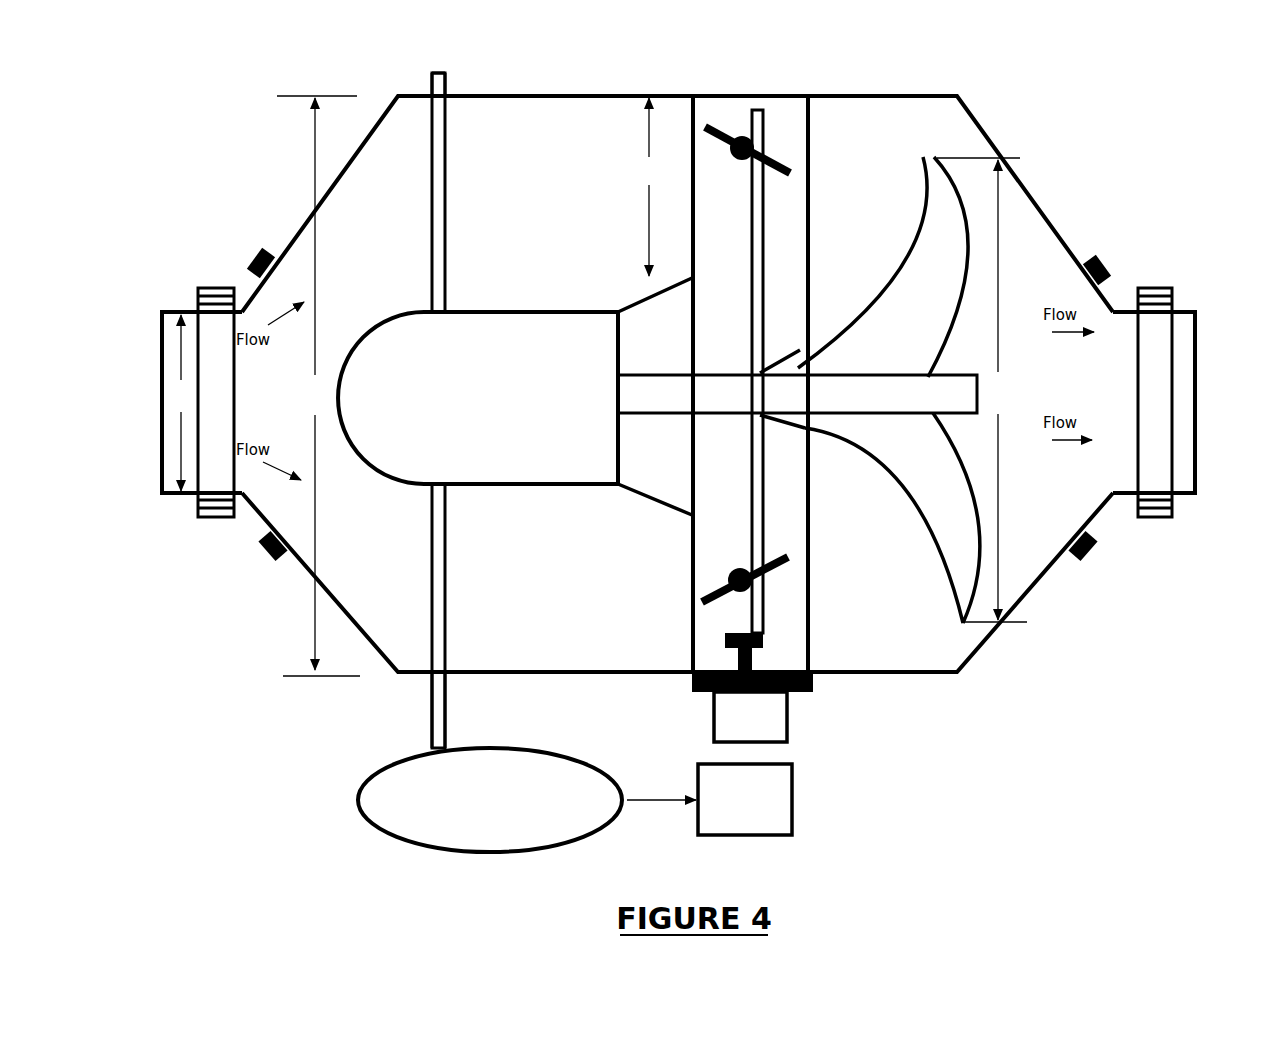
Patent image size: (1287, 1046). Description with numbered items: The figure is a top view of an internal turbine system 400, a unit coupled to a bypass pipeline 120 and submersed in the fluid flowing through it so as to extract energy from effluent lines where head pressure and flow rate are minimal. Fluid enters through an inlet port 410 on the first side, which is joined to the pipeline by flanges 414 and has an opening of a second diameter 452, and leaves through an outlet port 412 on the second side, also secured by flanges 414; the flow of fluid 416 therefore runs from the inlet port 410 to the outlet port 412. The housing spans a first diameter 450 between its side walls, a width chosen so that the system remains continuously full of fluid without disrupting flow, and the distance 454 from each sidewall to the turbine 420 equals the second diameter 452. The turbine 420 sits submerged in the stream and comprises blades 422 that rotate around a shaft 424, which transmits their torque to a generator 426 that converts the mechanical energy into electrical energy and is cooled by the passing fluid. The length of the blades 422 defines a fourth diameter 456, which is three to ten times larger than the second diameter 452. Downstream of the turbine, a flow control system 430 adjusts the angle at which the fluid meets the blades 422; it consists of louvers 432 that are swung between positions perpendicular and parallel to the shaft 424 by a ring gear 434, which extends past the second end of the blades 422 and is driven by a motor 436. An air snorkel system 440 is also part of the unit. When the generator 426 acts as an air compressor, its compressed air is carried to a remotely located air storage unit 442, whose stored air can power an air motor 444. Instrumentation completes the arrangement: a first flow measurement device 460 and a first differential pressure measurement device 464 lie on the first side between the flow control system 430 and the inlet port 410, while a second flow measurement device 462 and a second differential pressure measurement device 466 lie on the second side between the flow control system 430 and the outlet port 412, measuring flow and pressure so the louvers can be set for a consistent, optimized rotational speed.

The internal turbine system 400 is at (266, 730).
The inlet port 410 is at (162, 308).
The outlet port 412 is at (1214, 313).
The flanges 414 is at (213, 284).
The flow of fluid 416 is at (540, 202).
The turbine 420 is at (573, 296).
The blades 422 is at (870, 390).
The shaft 424 is at (988, 370).
The generator 426 is at (478, 398).
The flow control system 430 is at (830, 640).
The louvers 432 is at (790, 158).
The ring gear 434 is at (748, 521).
The motor 436 is at (792, 727).
The air snorkel system 440 is at (428, 87).
The air storage unit 442 is at (490, 800).
The air motor 444 is at (709, 799).
The first diameter 450 is at (318, 386).
The second diameter 452 is at (181, 403).
The distance 454 is at (651, 187).
The fourth diameter 456 is at (988, 390).
The first flow measurement device 460 is at (267, 250).
The second flow measurement device 462 is at (1097, 250).
The first differential pressure measurement device 464 is at (262, 554).
The second differential pressure measurement device 466 is at (1095, 553).
The bypass pipeline 120 is at (465, 677).